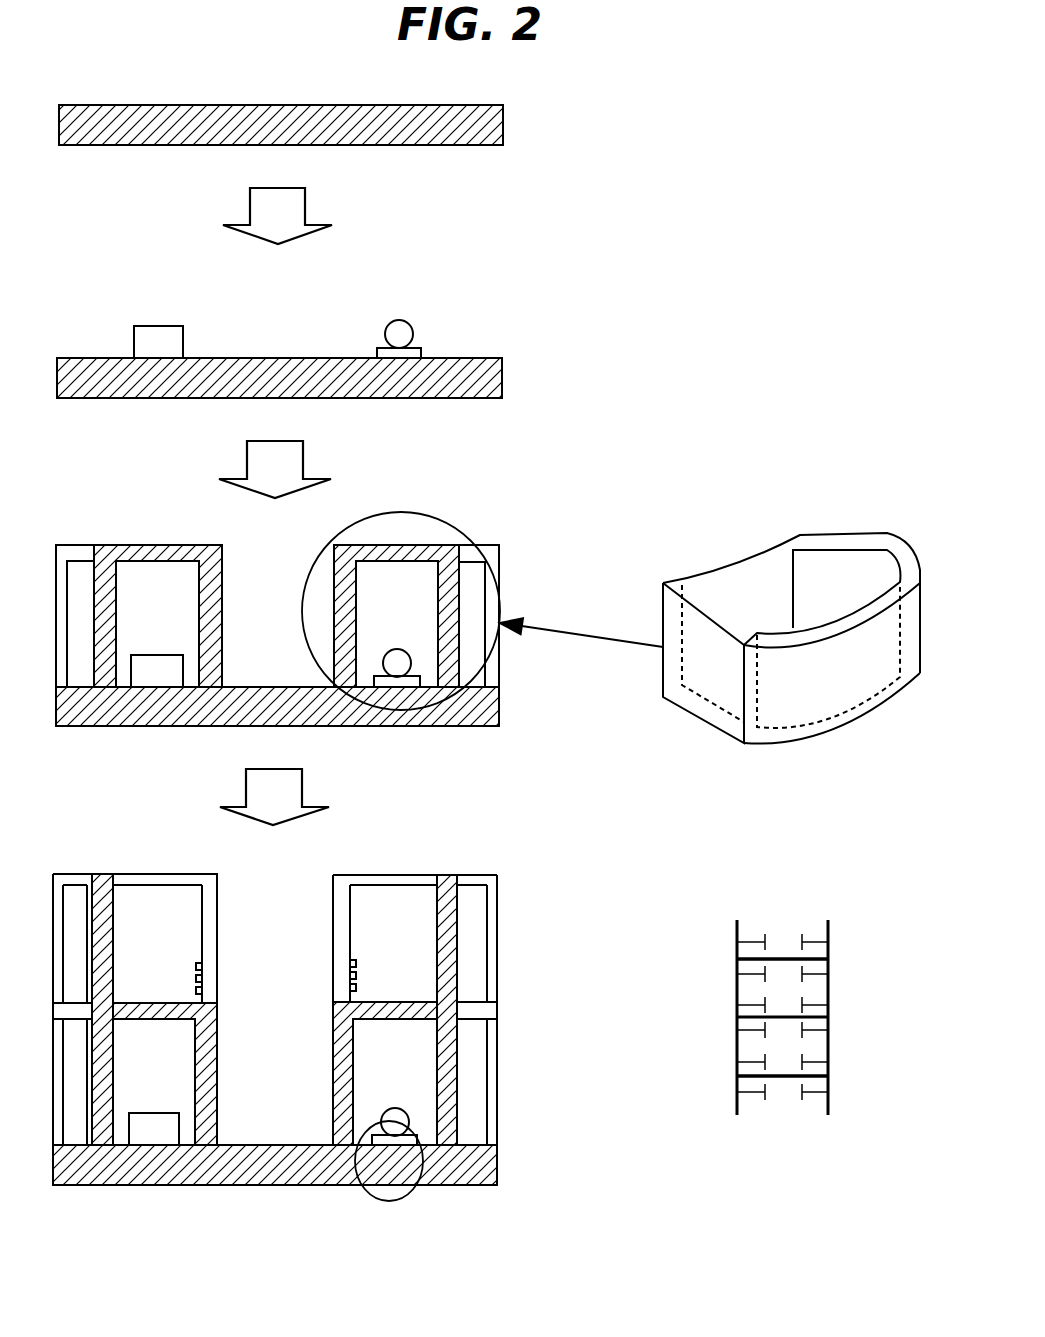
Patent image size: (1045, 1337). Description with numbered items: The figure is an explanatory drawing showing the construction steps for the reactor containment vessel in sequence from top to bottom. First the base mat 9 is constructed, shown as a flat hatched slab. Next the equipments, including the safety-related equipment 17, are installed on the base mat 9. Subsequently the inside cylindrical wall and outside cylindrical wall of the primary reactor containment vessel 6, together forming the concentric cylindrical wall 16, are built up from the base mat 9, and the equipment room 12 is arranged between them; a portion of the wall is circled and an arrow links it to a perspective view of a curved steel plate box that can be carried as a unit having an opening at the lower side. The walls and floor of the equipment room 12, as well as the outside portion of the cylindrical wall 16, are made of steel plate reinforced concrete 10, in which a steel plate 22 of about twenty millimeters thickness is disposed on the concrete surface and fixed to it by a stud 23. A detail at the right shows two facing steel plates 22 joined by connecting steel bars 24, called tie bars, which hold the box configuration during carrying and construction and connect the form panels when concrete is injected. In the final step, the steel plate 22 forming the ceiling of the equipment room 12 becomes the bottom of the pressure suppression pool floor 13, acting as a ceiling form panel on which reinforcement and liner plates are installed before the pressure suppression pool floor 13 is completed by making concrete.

The base mat 9 is at (503, 126).
The equipment room 12 is at (427, 659).
The pressure suppression pool floor 13 is at (448, 560).
The safety-related equipment 17 is at (420, 682).
The steel plate 22 is at (717, 688).
The primary reactor containment vessel 6 is at (448, 882).
The cylindrical wall 16 is at (445, 947).
The steel plate reinforced concrete 10 is at (397, 1020).
The stud 23 is at (805, 975).
The connecting steel bar 24 is at (778, 1077).